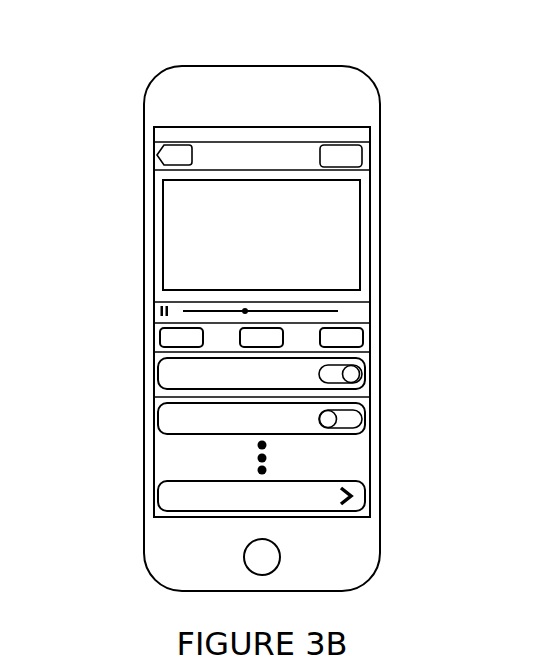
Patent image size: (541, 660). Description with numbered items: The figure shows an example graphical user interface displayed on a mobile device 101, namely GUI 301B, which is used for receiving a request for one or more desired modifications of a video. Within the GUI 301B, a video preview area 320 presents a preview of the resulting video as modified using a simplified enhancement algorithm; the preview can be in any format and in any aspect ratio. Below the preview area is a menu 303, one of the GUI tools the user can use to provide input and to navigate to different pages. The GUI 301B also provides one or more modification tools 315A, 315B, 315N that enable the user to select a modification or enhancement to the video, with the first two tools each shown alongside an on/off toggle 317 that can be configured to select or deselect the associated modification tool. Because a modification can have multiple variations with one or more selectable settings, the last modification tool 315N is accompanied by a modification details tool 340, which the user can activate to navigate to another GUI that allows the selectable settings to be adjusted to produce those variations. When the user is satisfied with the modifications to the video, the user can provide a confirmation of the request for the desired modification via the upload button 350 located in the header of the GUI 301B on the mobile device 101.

The mobile device 101 is at (144, 113).
The GUI 301B is at (154, 205).
The menu 303 is at (161, 350).
The video preview area 320 is at (247, 258).
The upload button 350 is at (360, 168).
The modification tool 315A is at (261, 373).
The modification tool 315B is at (261, 418).
The modification tool 315N is at (261, 496).
The on/off toggle 317 is at (333, 412).
The modification details tool 340 is at (351, 487).